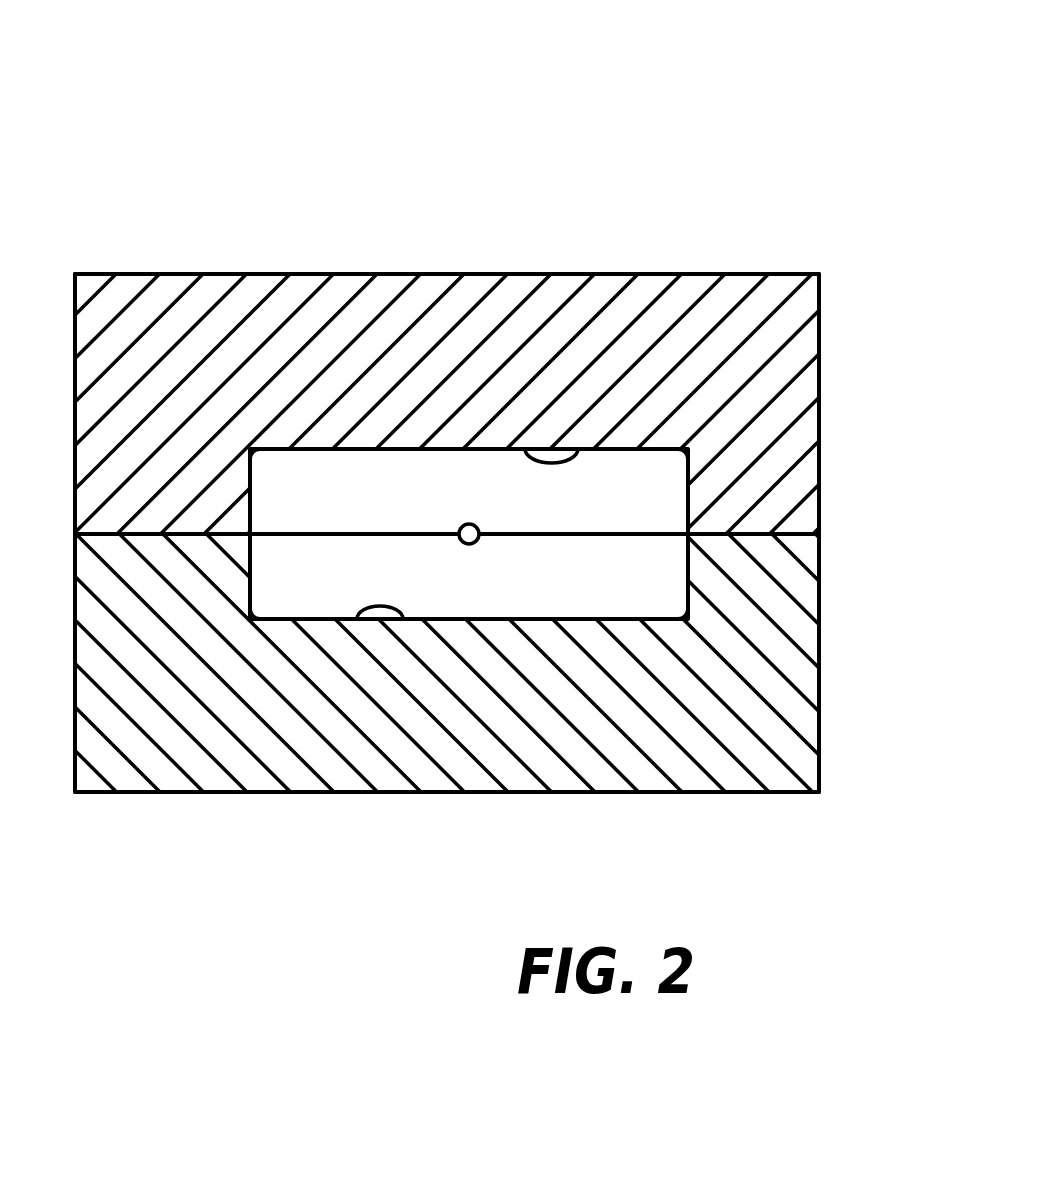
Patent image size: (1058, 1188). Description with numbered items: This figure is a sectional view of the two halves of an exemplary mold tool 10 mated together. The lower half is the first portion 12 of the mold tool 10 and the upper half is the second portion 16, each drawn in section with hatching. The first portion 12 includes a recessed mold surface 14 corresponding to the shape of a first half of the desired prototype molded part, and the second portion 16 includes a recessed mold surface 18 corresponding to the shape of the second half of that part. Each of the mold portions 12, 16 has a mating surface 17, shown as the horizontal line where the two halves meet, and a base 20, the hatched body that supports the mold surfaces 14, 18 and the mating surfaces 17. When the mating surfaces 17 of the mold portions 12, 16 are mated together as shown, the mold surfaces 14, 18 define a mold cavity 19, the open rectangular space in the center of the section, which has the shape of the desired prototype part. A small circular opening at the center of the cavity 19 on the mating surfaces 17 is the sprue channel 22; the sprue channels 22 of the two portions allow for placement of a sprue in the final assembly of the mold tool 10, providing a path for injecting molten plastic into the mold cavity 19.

The mold tool 10 is at (748, 161).
The first portion 12 is at (750, 687).
The recessed mold surface 14 is at (385, 608).
The second portion 16 is at (815, 394).
The mating surface 17 is at (745, 532).
The recessed mold surface 18 is at (578, 450).
The mold cavity 19 is at (318, 485).
The base 20 is at (157, 328).
The sprue channel 22 is at (467, 524).